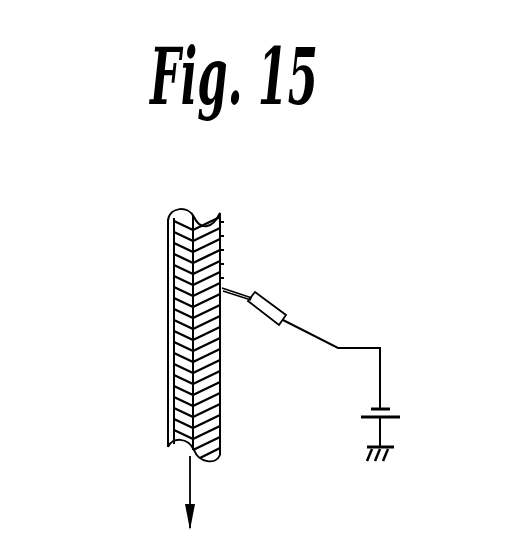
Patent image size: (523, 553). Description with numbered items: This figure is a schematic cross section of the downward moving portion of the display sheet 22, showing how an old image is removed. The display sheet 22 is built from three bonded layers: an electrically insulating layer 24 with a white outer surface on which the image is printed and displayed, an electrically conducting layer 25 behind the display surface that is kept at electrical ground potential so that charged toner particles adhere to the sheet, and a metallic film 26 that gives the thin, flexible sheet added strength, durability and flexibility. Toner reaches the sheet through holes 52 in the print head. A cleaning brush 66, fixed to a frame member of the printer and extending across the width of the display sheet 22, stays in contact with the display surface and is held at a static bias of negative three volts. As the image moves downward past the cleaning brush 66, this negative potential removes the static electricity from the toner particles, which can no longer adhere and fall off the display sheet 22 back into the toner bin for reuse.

The display sheet 22 is at (132, 209).
The electrically insulating layer 24 is at (221, 386).
The electrically conducting layer 25 is at (178, 449).
The metallic film 26 is at (170, 378).
The holes 52 is at (221, 247).
The cleaning brush 66 is at (270, 306).